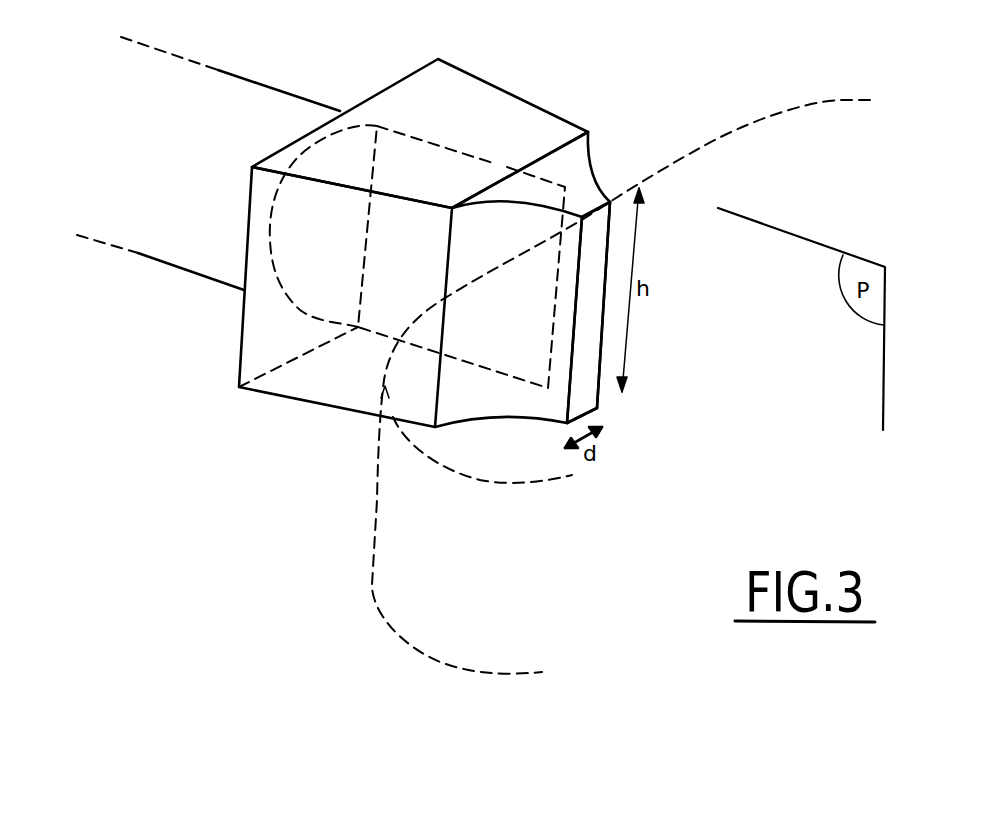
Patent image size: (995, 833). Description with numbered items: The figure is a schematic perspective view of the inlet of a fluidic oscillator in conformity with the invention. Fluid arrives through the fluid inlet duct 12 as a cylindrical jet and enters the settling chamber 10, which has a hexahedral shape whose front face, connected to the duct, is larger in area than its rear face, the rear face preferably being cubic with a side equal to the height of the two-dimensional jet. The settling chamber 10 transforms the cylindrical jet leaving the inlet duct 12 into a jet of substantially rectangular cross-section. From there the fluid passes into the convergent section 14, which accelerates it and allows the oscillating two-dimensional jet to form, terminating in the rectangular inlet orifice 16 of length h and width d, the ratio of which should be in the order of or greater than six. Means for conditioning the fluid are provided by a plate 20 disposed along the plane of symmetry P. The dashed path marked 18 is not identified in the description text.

The settling chamber 10 is at (505, 90).
The fluid inlet duct 12 is at (268, 90).
The convergent section 14 is at (597, 173).
The rectangular inlet orifice 16 is at (597, 252).
The wire path 18 is at (833, 100).
The plate 20 is at (493, 165).